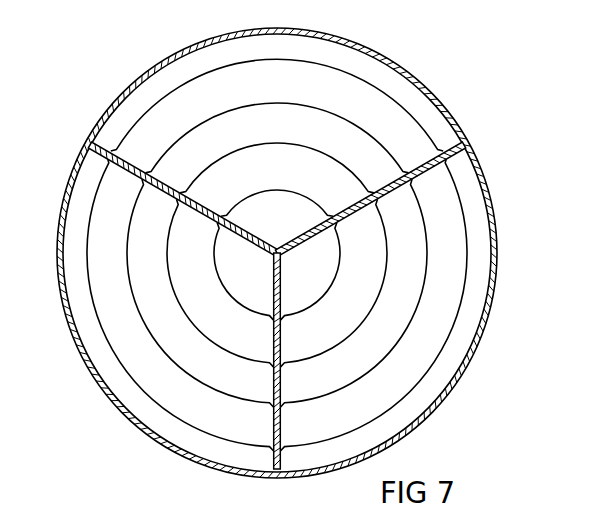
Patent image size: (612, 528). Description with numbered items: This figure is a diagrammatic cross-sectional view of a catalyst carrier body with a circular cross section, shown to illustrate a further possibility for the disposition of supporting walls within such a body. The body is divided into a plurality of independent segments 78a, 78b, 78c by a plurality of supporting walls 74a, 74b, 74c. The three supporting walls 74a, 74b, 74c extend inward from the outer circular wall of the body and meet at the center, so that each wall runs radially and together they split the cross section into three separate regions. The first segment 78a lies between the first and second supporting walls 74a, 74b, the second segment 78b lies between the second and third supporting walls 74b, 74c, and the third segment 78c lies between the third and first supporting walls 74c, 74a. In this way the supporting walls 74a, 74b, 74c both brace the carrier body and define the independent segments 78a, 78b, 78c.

The supporting wall 74a is at (130, 160).
The supporting wall 74b is at (421, 166).
The supporting wall 74c is at (271, 420).
The segment 78a is at (337, 92).
The segment 78b is at (428, 315).
The segment 78c is at (127, 318).